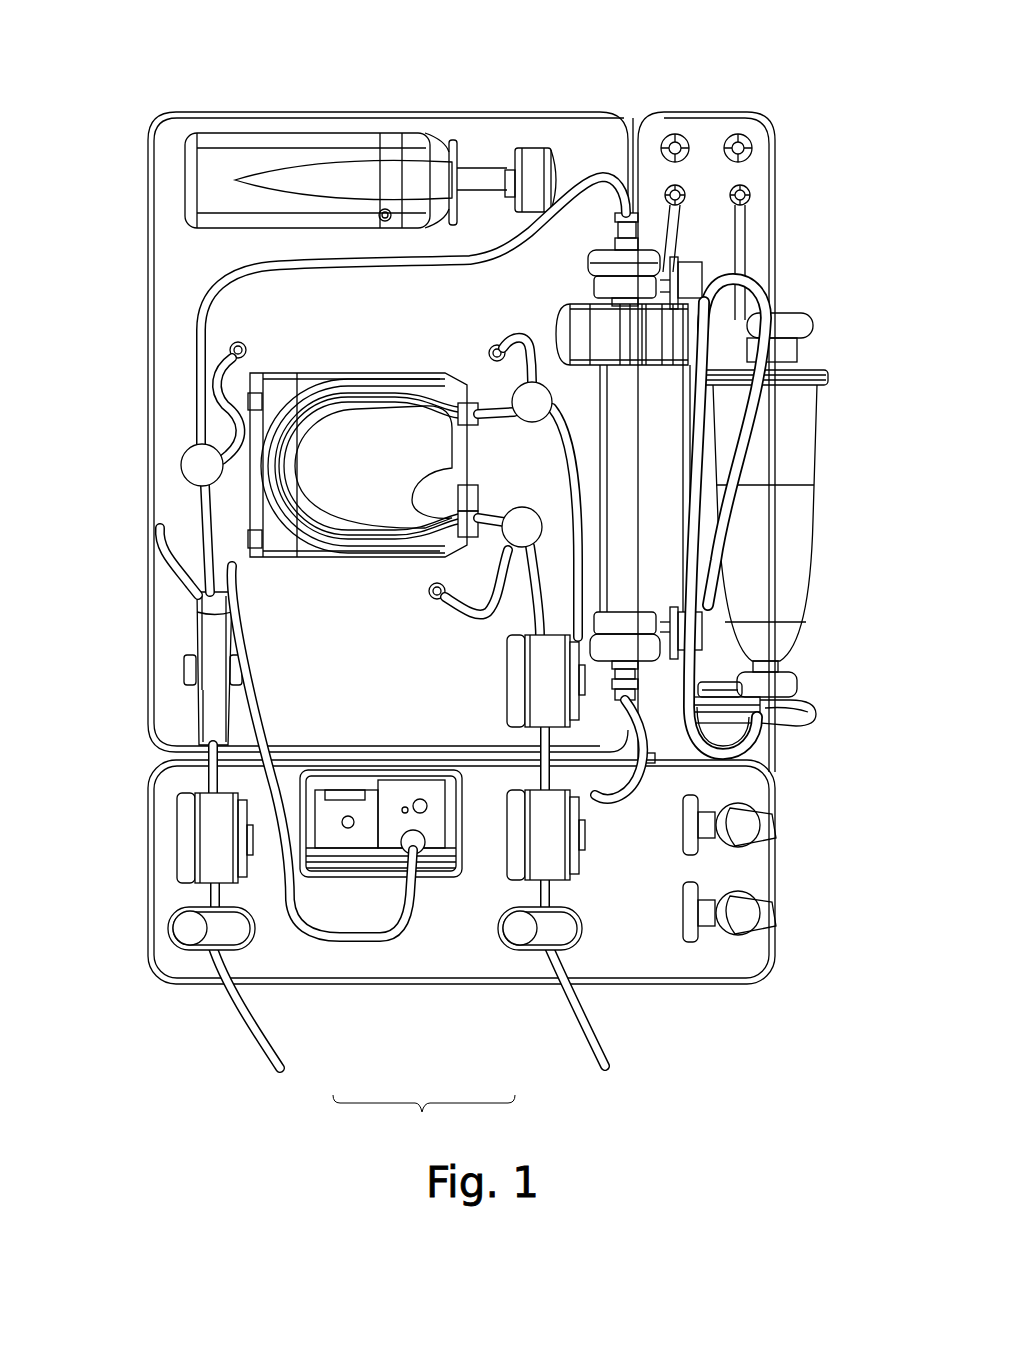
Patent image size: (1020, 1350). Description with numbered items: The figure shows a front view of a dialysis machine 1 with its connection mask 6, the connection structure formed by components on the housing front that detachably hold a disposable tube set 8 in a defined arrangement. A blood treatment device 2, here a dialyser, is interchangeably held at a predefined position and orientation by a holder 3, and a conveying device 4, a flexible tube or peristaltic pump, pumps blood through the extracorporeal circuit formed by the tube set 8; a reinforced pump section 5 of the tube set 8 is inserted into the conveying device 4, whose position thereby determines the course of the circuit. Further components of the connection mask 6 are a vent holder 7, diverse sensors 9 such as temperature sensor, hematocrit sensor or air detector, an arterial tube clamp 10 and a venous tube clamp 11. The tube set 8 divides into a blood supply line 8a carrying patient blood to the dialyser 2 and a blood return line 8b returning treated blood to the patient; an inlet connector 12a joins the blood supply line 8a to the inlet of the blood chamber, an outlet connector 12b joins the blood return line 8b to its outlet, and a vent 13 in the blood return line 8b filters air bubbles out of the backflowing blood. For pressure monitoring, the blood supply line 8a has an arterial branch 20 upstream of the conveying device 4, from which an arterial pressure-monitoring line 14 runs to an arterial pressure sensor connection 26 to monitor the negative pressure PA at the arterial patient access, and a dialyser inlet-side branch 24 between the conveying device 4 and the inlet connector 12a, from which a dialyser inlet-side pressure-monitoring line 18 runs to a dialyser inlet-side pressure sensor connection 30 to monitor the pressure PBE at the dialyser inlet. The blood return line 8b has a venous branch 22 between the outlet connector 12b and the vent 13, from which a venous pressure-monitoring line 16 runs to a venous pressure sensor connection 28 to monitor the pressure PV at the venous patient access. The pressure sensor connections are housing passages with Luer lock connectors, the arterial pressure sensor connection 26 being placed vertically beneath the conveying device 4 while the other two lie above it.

The dialysis machine 1 is at (477, 584).
The connection mask 6 is at (115, 190).
The dialyser inlet-side pressure sensor connection 30 is at (512, 190).
The dialyser inlet-side pressure-monitoring line 18 is at (546, 386).
The outlet connector 12b is at (648, 208).
The blood return line 8b is at (218, 268).
The venous pressure sensor connection 28 is at (230, 349).
The pressure at the venous patient access PV is at (262, 362).
The venous pressure-monitoring line 16 is at (252, 402).
The conveying device 4 is at (318, 452).
The pump section 5 is at (256, 470).
The venous branch 22 is at (196, 466).
The pressure at the dialyser inlet PBE is at (481, 345).
The holder 3 is at (688, 332).
The dialyser inlet-side branch 24 is at (714, 428).
The arterial branch 20 is at (642, 563).
The blood treatment device 2 is at (726, 488).
The arterial pressure sensor connection 26 is at (230, 598).
The arterial pressure-monitoring line 14 is at (142, 676).
The vent holder 7 is at (190, 670).
The vent 13 is at (203, 707).
The inlet connector 12a is at (797, 697).
The sensors 9 is at (186, 830).
The venous tube clamp 11 is at (186, 934).
The blood supply line 8a is at (582, 1040).
The tube set 8 is at (424, 1122).
The arterial tube clamp 10 is at (560, 945).
The negative pressure at the arterial patient access PA is at (468, 582).